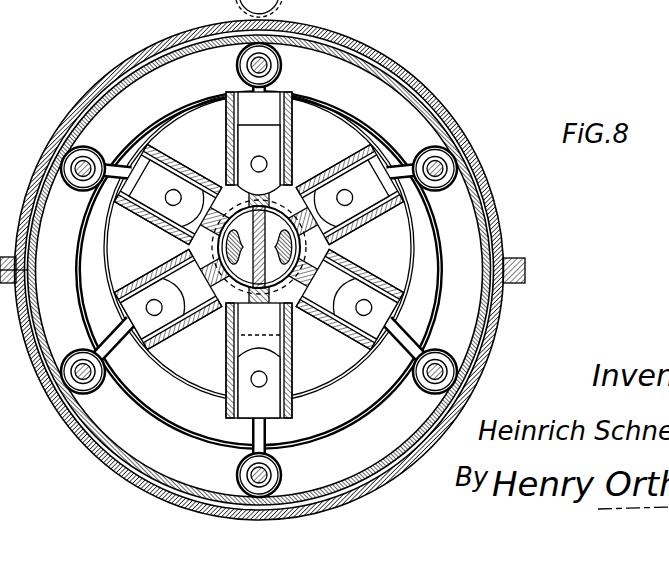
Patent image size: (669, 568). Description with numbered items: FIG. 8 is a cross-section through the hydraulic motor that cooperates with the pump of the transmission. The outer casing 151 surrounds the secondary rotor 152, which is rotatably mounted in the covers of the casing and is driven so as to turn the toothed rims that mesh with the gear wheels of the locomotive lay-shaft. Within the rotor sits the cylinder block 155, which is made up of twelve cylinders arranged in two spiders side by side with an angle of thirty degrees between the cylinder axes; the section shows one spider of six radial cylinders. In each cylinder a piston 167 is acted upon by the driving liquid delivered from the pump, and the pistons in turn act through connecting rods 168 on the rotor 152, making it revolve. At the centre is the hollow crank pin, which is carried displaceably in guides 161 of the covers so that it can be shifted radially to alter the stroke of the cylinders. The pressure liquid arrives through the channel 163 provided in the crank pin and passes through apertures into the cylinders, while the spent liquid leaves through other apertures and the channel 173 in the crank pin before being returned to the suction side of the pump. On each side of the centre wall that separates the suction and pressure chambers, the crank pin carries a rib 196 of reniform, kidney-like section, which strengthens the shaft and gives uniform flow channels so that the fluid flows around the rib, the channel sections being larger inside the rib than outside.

The casing 151 is at (455, 113).
The secondary rotor 152 is at (400, 88).
The cylinder block 155 is at (386, 213).
The guides 161 is at (335, 246).
The channel 163 is at (290, 195).
The pistons 167 is at (265, 397).
The connecting rods 168 is at (260, 427).
The channel 173 is at (152, 144).
The rib 196 is at (214, 248).